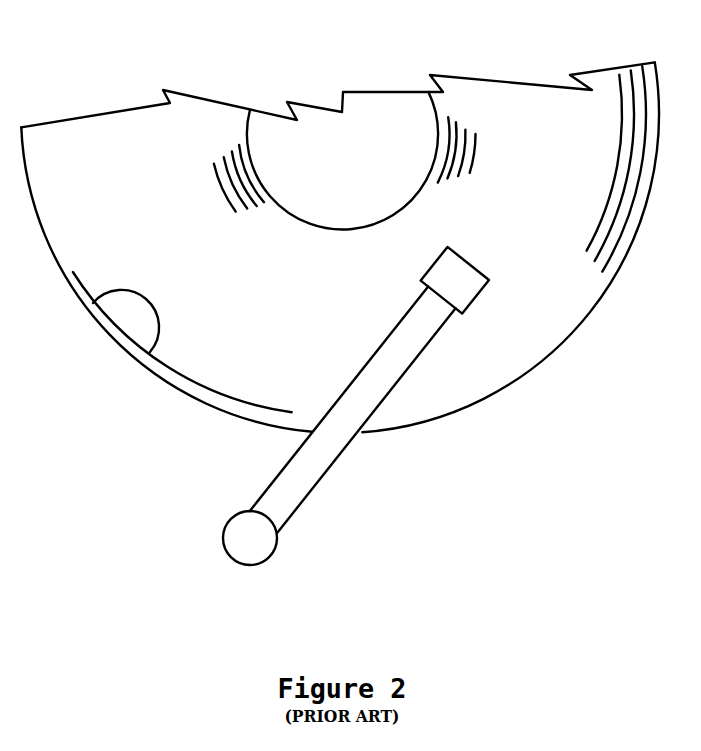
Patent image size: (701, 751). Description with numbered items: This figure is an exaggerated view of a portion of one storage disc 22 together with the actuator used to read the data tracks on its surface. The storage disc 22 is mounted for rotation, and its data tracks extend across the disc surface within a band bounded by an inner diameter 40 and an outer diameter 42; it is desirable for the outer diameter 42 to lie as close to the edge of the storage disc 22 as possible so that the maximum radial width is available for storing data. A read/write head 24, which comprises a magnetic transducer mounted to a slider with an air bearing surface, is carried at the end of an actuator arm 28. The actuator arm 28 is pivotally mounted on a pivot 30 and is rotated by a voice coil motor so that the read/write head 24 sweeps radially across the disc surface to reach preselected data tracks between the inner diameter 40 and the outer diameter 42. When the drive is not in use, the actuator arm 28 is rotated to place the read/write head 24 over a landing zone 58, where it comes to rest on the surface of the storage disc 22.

The storage disc 22 is at (603, 67).
The read/write head 24 is at (472, 290).
The actuator arm 28 is at (403, 373).
The pivot 30 is at (233, 510).
The inner diameter 40 is at (447, 118).
The outer diameter 42 is at (93, 303).
The landing zone 58 is at (440, 97).